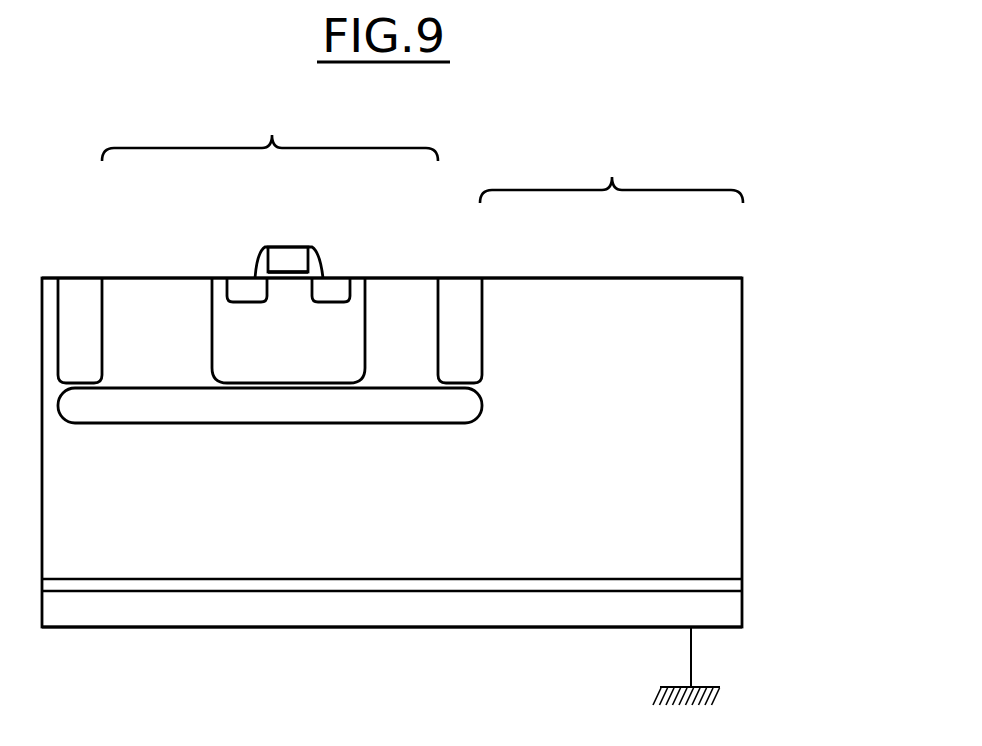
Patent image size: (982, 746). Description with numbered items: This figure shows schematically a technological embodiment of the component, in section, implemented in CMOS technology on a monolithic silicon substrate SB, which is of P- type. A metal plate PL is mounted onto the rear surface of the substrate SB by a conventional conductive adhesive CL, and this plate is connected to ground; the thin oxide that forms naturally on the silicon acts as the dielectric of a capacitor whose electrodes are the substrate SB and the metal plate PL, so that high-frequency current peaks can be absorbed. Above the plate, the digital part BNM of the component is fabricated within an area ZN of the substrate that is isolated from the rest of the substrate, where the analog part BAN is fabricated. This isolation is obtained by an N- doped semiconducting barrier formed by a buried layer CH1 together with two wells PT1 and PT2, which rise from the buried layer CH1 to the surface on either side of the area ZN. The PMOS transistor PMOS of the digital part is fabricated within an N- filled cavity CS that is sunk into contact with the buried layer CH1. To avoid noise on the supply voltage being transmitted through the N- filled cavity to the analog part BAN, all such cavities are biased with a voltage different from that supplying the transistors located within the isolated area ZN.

The substrate SB is at (432, 532).
The conductive adhesive CL is at (83, 588).
The metal plate PL is at (210, 617).
The buried layer CH1 is at (460, 405).
The well PT2 is at (77, 292).
The area of the substrate ZN is at (160, 290).
The n--filled cavity CS is at (357, 293).
The PMOS transistor PMOS is at (292, 243).
The well PT1 is at (455, 292).
The n--doped region N- is at (272, 340).
The p--doped region P- is at (548, 461).
The digital part BNM is at (270, 133).
The analog part BAN is at (611, 174).